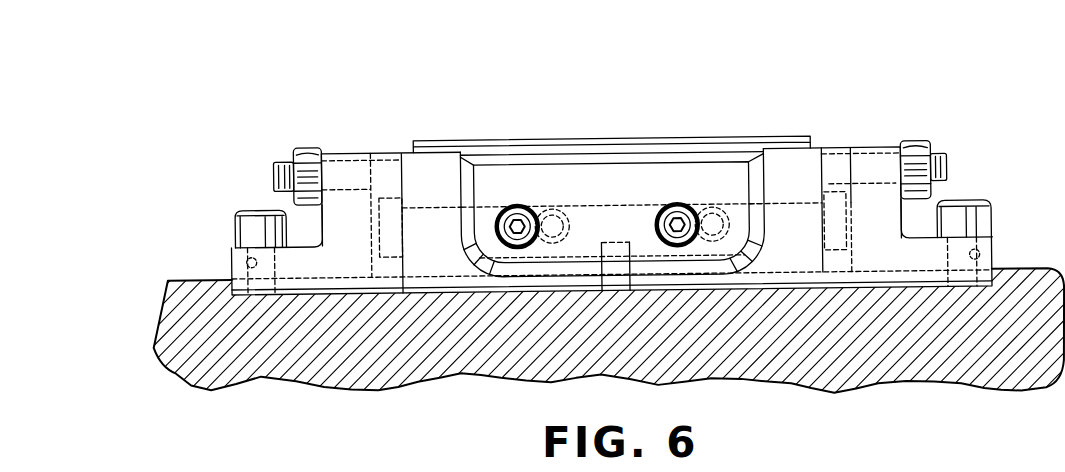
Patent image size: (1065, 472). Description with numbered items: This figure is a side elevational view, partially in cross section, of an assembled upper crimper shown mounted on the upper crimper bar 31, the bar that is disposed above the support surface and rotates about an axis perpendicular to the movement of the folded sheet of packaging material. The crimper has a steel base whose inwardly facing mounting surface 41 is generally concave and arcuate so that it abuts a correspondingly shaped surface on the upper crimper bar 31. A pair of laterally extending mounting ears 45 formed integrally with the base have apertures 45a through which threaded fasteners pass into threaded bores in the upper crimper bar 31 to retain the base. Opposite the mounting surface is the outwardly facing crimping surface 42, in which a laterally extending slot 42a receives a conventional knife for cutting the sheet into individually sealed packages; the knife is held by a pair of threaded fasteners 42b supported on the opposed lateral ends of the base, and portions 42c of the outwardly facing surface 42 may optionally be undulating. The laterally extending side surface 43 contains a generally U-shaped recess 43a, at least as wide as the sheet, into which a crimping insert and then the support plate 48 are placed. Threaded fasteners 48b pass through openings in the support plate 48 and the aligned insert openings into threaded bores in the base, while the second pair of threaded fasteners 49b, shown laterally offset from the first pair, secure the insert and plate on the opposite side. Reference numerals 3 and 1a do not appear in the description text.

The clamping device 3 is at (960, 103).
The rail / guide member 1a is at (243, 225).
The upper crimper bar 31 is at (885, 375).
The inwardly facing mounting surface 41 is at (787, 290).
The outwardly facing crimping surface 42 is at (350, 152).
The laterally extending slot 42a is at (792, 172).
The threaded fasteners 42b is at (283, 167).
The portions of the outwardly facing surface 42c is at (463, 466).
The laterally extending side surface 43 is at (350, 250).
The recess 43a is at (483, 190).
The mounting ears 45 is at (303, 233).
The apertures 45a is at (250, 257).
The support plate 48 is at (620, 177).
The threaded fasteners 48b is at (520, 205).
The threaded fasteners 49b is at (575, 203).